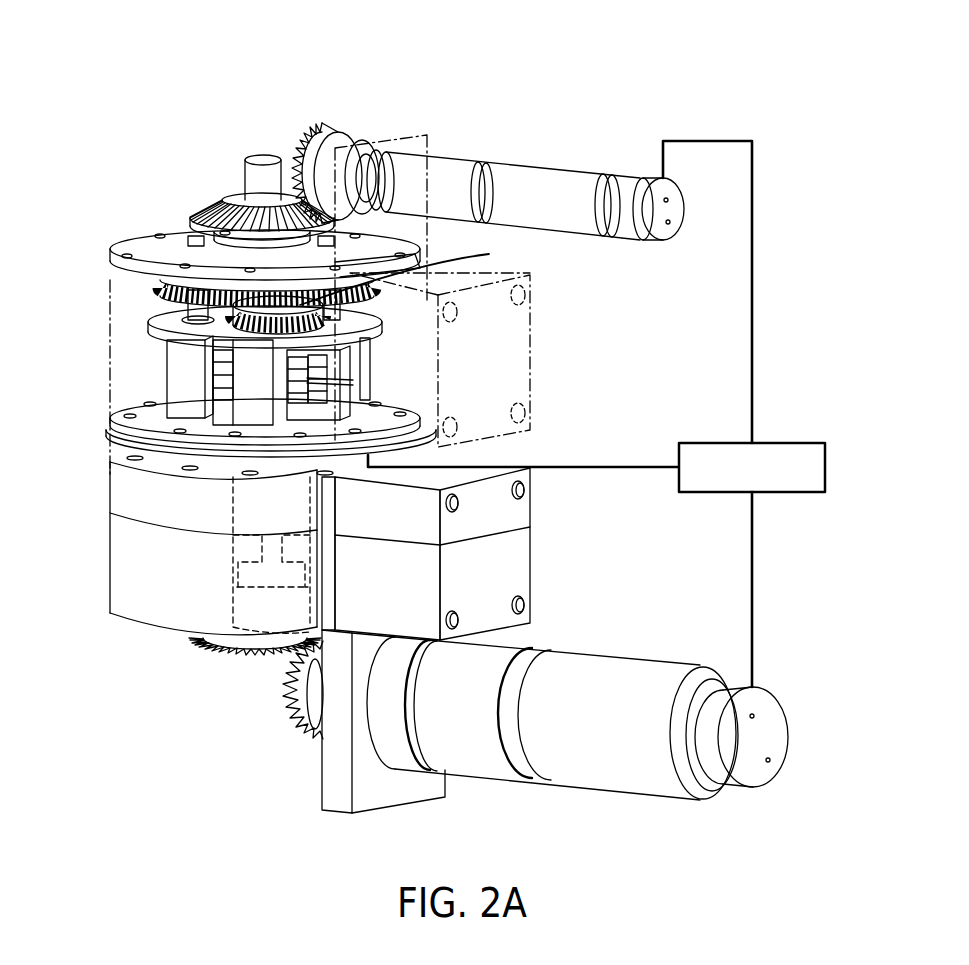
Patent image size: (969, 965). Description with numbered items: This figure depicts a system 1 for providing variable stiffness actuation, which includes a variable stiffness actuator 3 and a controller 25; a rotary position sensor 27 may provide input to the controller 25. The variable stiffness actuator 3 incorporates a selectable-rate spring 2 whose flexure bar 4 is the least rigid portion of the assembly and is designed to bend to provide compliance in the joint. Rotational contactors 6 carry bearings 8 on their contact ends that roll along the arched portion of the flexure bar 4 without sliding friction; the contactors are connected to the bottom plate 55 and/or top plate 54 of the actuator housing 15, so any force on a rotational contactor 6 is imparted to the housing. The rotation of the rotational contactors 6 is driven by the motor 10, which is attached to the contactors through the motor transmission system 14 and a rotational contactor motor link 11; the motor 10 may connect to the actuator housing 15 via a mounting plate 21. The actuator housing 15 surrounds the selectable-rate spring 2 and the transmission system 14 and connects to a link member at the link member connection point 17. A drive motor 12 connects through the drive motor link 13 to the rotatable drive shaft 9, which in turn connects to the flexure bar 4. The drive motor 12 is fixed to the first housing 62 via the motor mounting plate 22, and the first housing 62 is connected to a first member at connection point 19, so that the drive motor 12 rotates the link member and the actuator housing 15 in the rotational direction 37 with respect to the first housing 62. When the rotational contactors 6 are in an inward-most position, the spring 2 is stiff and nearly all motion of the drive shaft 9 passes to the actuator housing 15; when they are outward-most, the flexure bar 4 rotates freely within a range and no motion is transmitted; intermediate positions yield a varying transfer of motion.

The system 1 is at (741, 99).
The selectable-rate spring 2 is at (376, 366).
The variable stiffness actuator 3 is at (457, 78).
The flexure bar 4 is at (330, 373).
The rotational contactors 6 is at (178, 378).
The bearings 8 is at (218, 410).
The drive shaft 9 is at (262, 548).
The motor 10 is at (543, 178).
The rotational contactor motor link 11 is at (298, 146).
The drive motor 12 is at (628, 795).
The drive motor link 13 is at (273, 642).
The motor transmission system 14 is at (409, 272).
The actuator housing 15 is at (132, 298).
The link member connection point 17 is at (521, 300).
The connection point 19 is at (521, 492).
The mounting plate 21 is at (405, 126).
The motor mounting plate 22 is at (405, 808).
The controller 25 is at (825, 468).
The rotary position sensor 27 is at (123, 455).
The rotational direction 37 is at (104, 367).
The top plate 54 is at (150, 247).
The bottom plate 55 is at (110, 427).
The first housing 62 is at (163, 630).